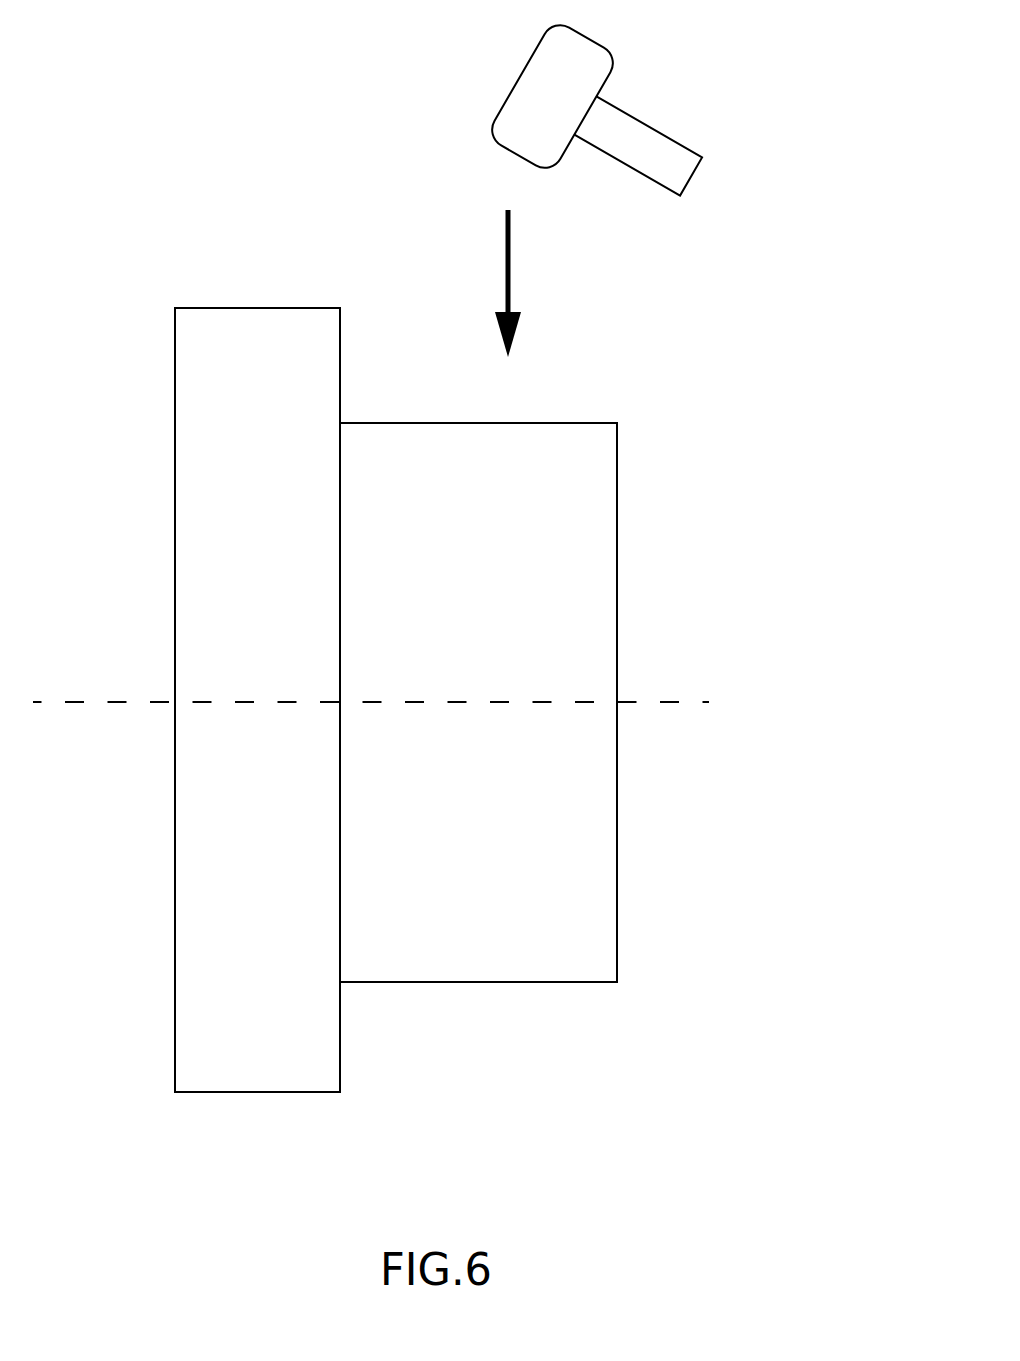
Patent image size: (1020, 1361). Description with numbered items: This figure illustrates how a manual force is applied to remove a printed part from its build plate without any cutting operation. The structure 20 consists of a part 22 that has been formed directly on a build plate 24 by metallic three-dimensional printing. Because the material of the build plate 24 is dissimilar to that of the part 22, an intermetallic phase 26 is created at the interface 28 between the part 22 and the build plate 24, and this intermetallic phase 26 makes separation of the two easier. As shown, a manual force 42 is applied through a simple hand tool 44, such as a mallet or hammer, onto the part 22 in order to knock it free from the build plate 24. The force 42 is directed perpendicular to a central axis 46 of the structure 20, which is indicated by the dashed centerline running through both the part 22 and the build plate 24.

The structure 20 is at (665, 478).
The part 22 is at (533, 953).
The build plate 24 is at (208, 1012).
The intermetallic phase 26 is at (340, 783).
The interface 28 is at (368, 1007).
The manual force 42 is at (506, 283).
The hand tool 44 is at (652, 145).
The central axis 46 is at (660, 702).